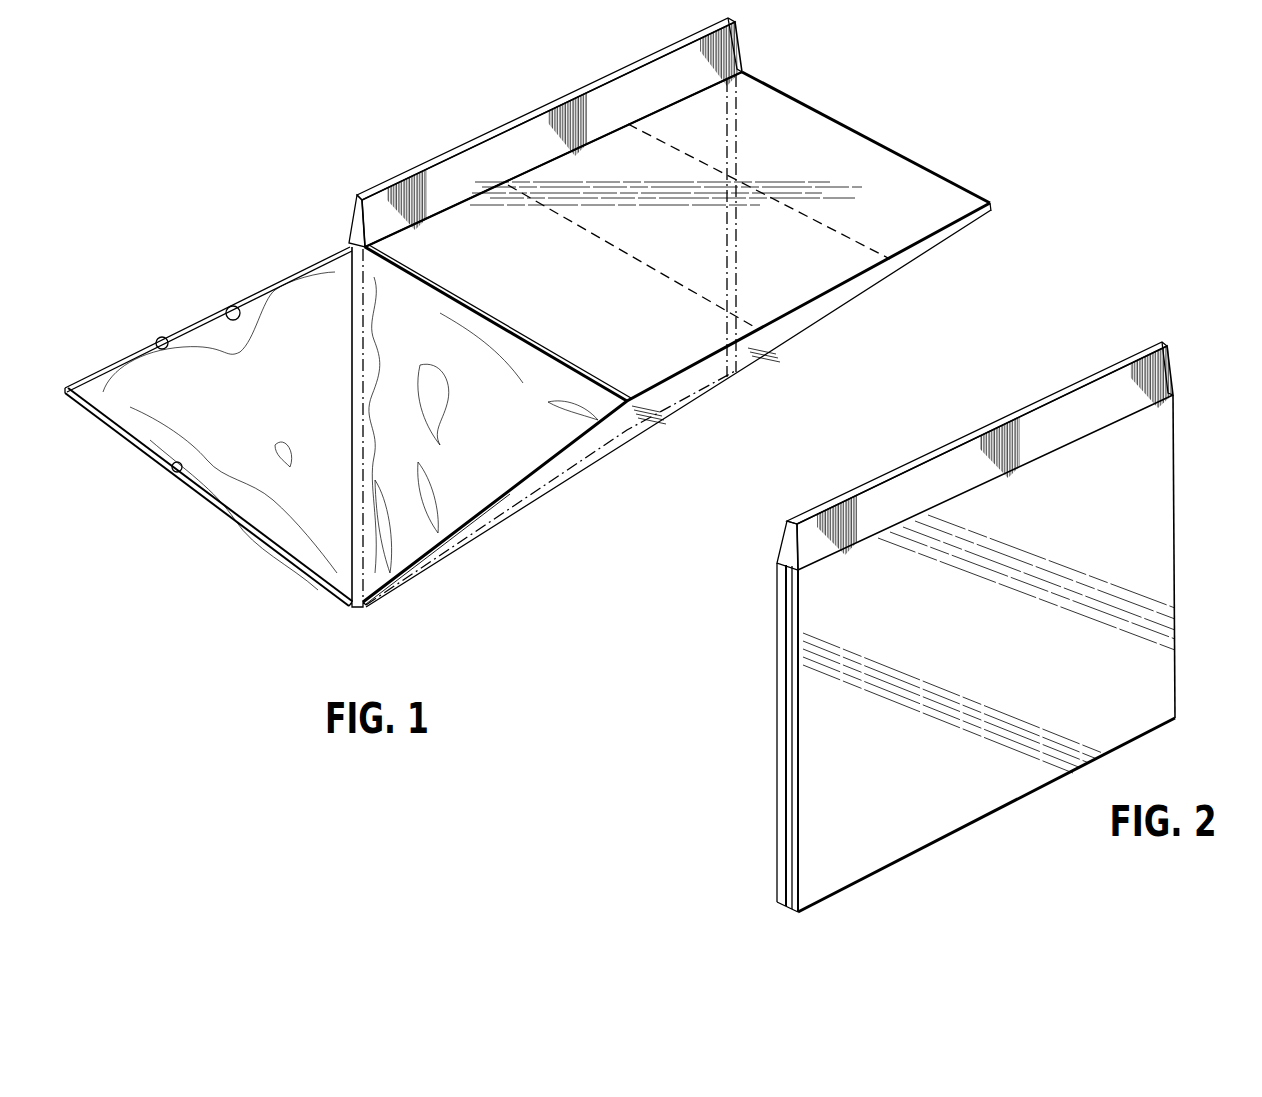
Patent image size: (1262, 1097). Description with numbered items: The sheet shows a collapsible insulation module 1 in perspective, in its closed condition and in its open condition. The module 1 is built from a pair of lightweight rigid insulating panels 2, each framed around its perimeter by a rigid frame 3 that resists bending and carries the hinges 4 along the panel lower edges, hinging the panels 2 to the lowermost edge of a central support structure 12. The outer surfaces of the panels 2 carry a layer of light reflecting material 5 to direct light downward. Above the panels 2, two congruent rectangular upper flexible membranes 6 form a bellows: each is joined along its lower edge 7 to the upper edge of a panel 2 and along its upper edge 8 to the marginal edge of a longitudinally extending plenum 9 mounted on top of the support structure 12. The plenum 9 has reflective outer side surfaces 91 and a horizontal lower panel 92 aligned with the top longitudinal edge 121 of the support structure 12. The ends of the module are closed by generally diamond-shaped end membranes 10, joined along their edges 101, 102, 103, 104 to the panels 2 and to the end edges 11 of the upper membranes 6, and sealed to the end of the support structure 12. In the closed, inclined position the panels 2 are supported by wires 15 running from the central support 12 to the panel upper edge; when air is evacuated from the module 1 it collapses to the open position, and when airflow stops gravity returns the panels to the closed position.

In FIG. 1, the collapsible insulation module 1 is at (898, 124).
In FIG. 1, the insulating panel 2 is at (607, 433).
In FIG. 2, the insulating panel 2 is at (979, 649).
In FIG. 1, the frame 3 is at (255, 533).
In FIG. 2, the frame 3 is at (822, 560).
In FIG. 1, the hinge 4 is at (352, 607).
In FIG. 1, the light reflecting material 5 is at (782, 337).
In FIG. 2, the light reflecting material 5 is at (1097, 572).
In FIG. 1, the upper flexible membrane 6 is at (273, 280).
In FIG. 1, the lower edge of upper membrane 7 is at (913, 243).
In FIG. 1, the upper edge of upper membrane 8 is at (442, 217).
In FIG. 1, the plenum 9 is at (353, 223).
In FIG. 2, the plenum 9 is at (787, 552).
In FIG. 1, the end membrane 10 is at (275, 405).
In FIG. 1, the end edge of upper membrane 11 is at (164, 337).
In FIG. 1, the central support structure 12 is at (366, 448).
In FIG. 1, the wire 15 is at (633, 261).
In FIG. 1, the outer side surface of plenum 91 is at (512, 150).
In FIG. 2, the outer side surface of plenum 91 is at (1057, 402).
In FIG. 1, the lower panel of plenum 92 is at (575, 150).
In FIG. 2, the lower panel of plenum 92 is at (1048, 457).
In FIG. 1, the edge of end membrane 101 is at (170, 466).
In FIG. 1, the edge of end membrane 102 is at (510, 493).
In FIG. 1, the edge of end membrane 103 is at (527, 343).
In FIG. 1, the edge of end membrane 104 is at (237, 306).
In FIG. 2, the top longitudinal edge of central support structure 121 is at (785, 755).